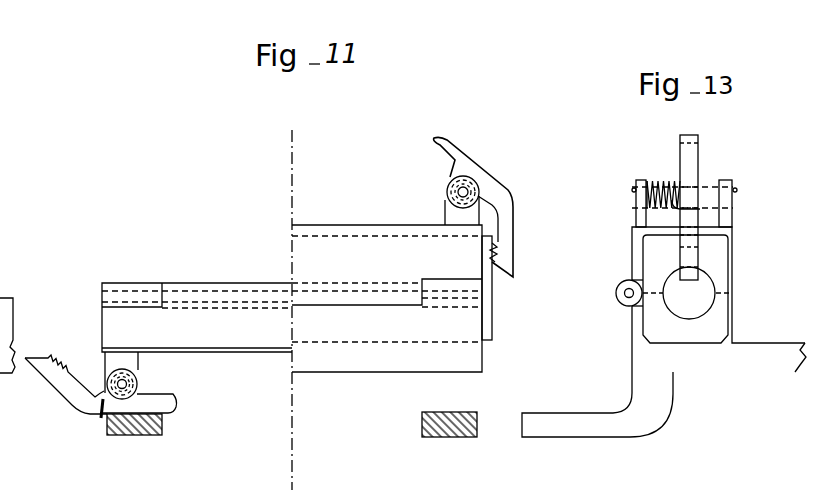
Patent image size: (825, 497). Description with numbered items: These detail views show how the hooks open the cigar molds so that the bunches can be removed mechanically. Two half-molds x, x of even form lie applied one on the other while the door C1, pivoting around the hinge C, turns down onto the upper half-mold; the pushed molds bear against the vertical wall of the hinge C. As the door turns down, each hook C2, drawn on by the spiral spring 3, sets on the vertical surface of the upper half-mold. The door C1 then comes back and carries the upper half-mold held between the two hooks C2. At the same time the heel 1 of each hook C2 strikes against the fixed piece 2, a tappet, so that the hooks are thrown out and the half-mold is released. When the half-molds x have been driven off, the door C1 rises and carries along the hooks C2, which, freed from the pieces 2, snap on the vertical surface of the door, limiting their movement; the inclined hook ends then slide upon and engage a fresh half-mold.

In FIG. 11, the heel 1 is at (163, 405).
In FIG. 13, the heel 1 is at (690, 153).
In FIG. 11, the fixed piece 2 is at (128, 435).
In FIG. 13, the fixed piece 2 is at (580, 427).
In FIG. 11, the spiral spring 3 is at (137, 376).
In FIG. 13, the spiral spring 3 is at (662, 182).
In FIG. 11, the hinge C is at (212, 296).
In FIG. 13, the hinge C is at (616, 293).
In FIG. 11, the door C1 is at (292, 298).
In FIG. 13, the door C1 is at (640, 250).
In FIG. 11, the hook C2 is at (67, 396).
In FIG. 13, the hook C2 is at (698, 247).
In FIG. 11, the half-mold x is at (487, 246).
In FIG. 13, the half-mold x is at (660, 291).